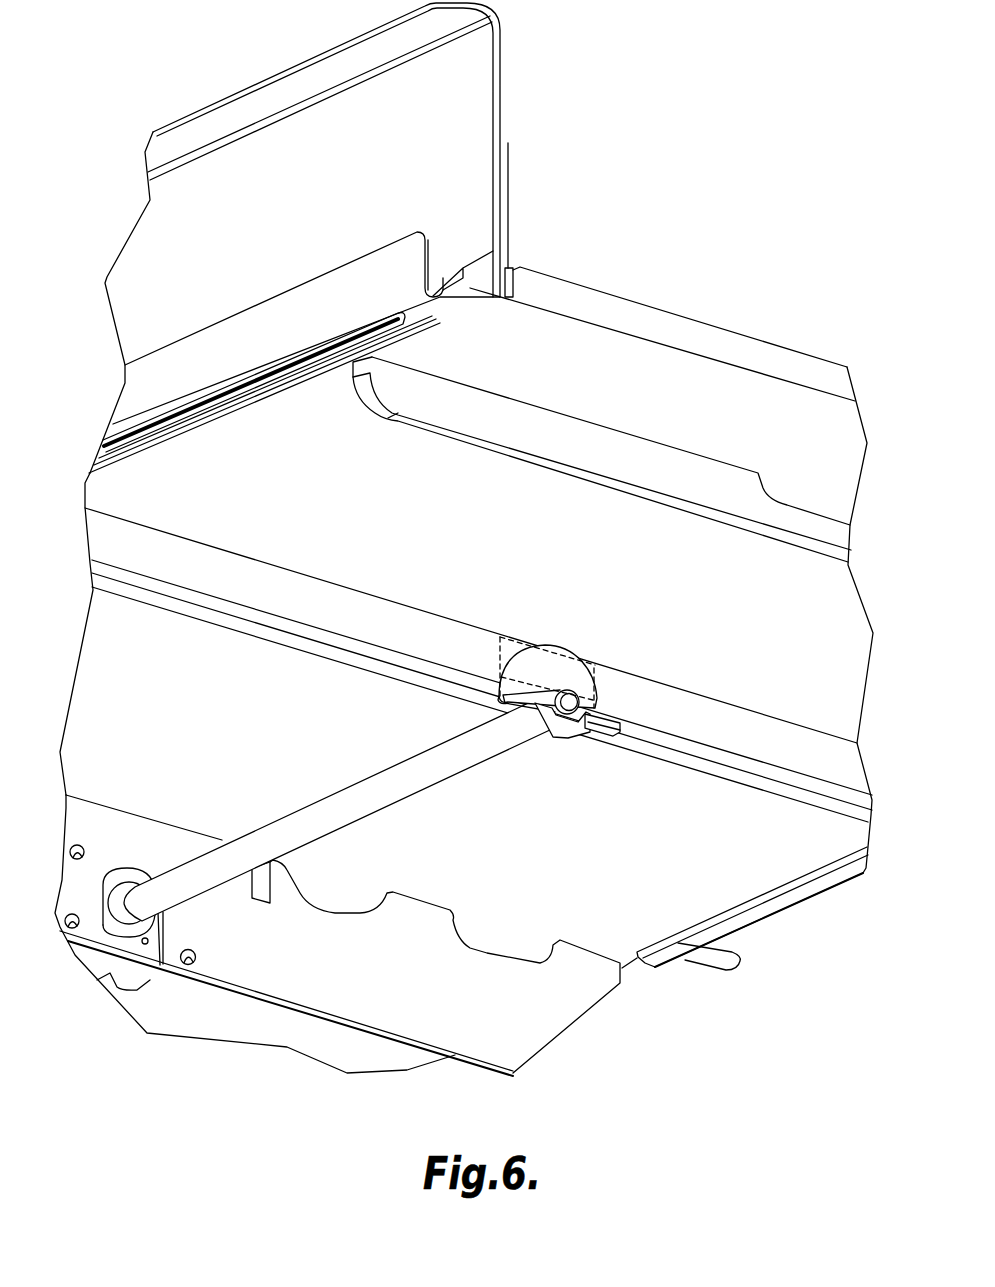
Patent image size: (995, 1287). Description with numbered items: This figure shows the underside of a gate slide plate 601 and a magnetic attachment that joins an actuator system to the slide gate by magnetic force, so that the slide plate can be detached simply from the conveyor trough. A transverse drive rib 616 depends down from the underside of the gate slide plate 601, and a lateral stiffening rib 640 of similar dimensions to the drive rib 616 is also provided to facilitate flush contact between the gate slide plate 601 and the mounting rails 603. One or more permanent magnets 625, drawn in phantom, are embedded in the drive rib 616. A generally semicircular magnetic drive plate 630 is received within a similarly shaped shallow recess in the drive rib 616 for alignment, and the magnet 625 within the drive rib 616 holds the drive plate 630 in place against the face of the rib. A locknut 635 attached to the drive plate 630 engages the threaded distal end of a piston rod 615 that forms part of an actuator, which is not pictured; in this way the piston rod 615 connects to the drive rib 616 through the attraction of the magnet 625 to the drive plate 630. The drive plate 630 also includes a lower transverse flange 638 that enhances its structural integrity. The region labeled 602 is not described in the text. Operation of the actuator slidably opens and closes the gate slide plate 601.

The gate slide plate 601 is at (631, 598).
The lower section of base 602 is at (258, 731).
The mounting rails 603 is at (168, 351).
The piston rod 615 is at (418, 782).
The transverse drive rib 616 is at (278, 586).
The permanent magnets 625 is at (481, 649).
The magnetic drive plate 630 is at (593, 698).
The locknut 635 is at (537, 728).
The lower transverse flange 638 is at (593, 734).
The lateral stiffening rib 640 is at (608, 451).